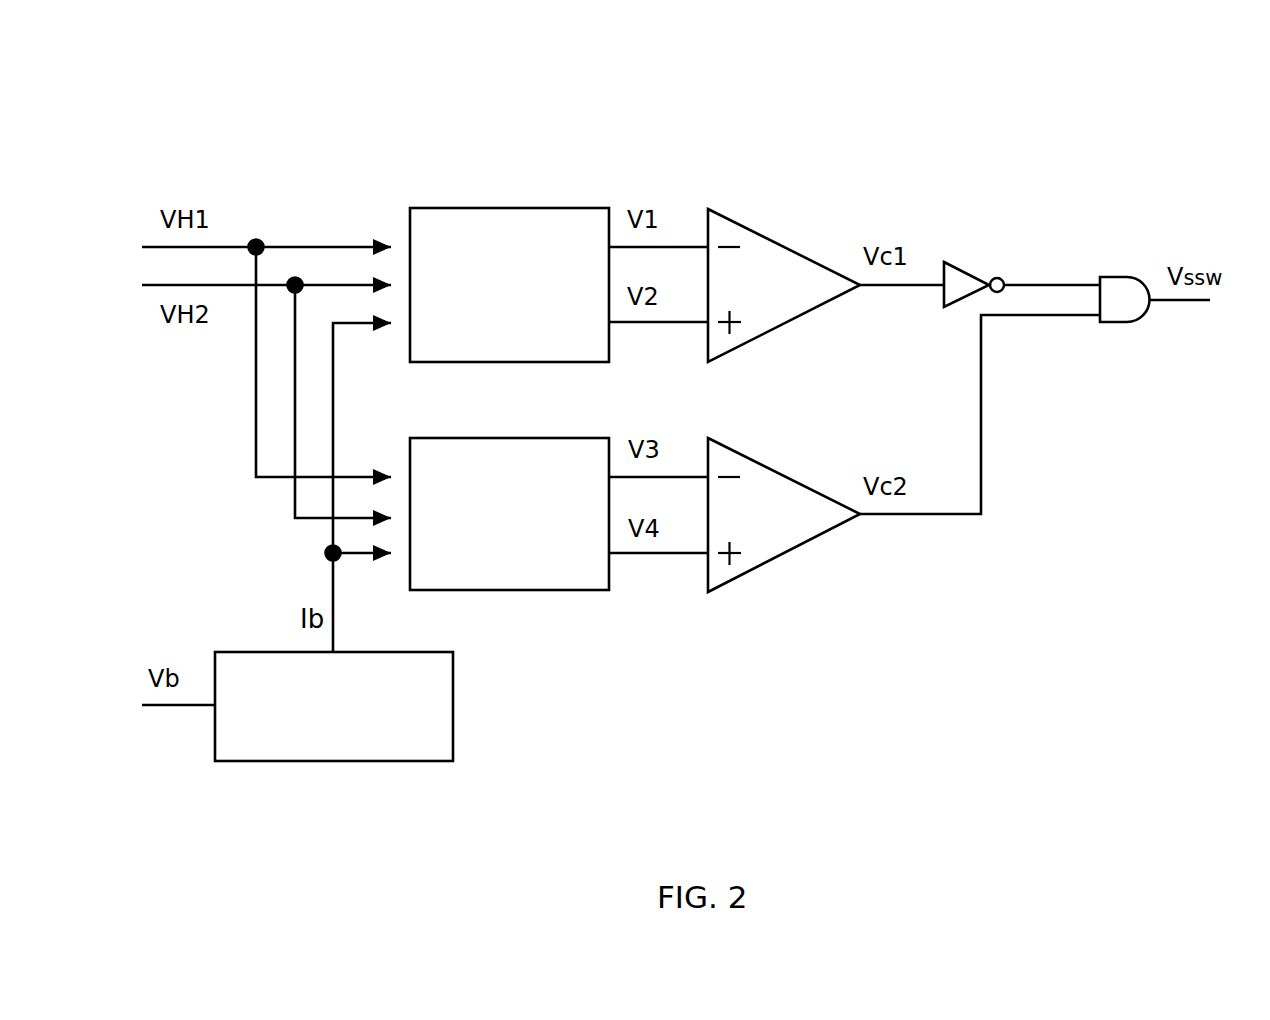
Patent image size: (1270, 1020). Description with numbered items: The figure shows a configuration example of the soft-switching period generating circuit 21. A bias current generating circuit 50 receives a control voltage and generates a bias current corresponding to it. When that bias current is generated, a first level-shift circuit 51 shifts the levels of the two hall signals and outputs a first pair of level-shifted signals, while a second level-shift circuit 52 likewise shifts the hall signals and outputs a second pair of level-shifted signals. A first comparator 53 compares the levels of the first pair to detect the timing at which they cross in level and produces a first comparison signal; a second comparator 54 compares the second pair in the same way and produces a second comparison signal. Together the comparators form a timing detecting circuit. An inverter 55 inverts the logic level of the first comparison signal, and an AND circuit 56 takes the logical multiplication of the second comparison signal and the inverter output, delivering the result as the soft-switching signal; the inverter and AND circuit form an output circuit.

The soft-switching period generating circuit 21 is at (793, 117).
The bias current generating circuit 50 is at (455, 680).
The level-shift circuit 51 is at (450, 208).
The level-shift circuit 52 is at (425, 438).
The comparator 53 is at (720, 209).
The comparator 54 is at (720, 438).
The inverter 55 is at (966, 273).
The AND circuit 56 is at (1122, 277).